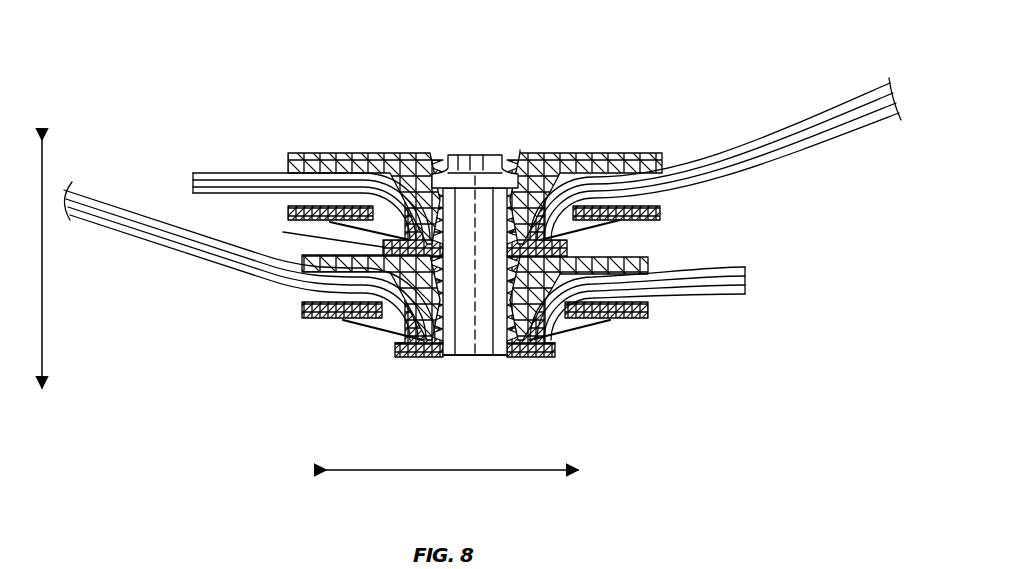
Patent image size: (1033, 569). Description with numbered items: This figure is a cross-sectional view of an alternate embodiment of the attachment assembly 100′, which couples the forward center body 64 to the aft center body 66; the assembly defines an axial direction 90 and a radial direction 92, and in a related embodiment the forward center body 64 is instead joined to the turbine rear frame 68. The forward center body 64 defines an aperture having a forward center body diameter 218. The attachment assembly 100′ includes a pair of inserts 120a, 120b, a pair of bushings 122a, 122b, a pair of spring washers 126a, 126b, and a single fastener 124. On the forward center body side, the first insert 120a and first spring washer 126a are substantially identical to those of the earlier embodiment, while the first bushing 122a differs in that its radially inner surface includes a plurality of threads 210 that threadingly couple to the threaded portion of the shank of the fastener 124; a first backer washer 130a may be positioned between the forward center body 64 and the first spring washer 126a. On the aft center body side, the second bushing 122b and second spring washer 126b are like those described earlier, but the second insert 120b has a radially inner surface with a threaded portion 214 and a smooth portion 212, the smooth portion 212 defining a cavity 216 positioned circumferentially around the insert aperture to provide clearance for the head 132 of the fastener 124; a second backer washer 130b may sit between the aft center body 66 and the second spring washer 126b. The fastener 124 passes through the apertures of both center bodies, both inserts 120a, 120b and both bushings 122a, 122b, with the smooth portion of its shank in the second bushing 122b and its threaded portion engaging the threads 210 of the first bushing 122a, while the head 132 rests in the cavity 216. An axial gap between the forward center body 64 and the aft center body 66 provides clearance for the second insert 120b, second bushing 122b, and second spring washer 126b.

The attachment assembly 100′ is at (196, 64).
The axial direction 90 is at (42, 256).
The radial direction 92 is at (362, 472).
The head 132 is at (478, 153).
The threaded portion 214 is at (401, 152).
The smooth portion 212 is at (537, 157).
The cavity 216 is at (514, 146).
The second insert 120b is at (338, 153).
The first insert 120a is at (643, 263).
The second bushing 122b is at (285, 232).
The first bushing 122a is at (412, 357).
The turbine rear frame 68 is at (238, 168).
The forward center body 64 is at (102, 232).
The aft center body 66 is at (840, 108).
The second backer washer 130b is at (657, 209).
The first backer washer 130a is at (300, 310).
The second spring washer 126b is at (600, 232).
The first spring washer 126a is at (570, 330).
The forward center body diameter 218 is at (266, 241).
The threads 210 is at (486, 358).
The fastener 124 is at (467, 358).